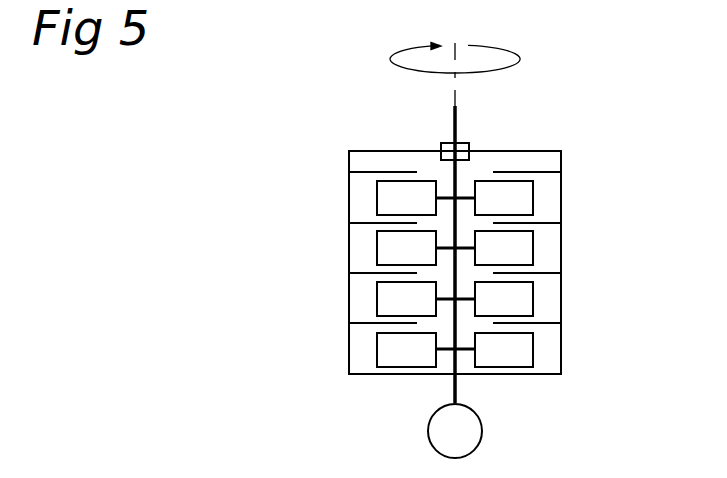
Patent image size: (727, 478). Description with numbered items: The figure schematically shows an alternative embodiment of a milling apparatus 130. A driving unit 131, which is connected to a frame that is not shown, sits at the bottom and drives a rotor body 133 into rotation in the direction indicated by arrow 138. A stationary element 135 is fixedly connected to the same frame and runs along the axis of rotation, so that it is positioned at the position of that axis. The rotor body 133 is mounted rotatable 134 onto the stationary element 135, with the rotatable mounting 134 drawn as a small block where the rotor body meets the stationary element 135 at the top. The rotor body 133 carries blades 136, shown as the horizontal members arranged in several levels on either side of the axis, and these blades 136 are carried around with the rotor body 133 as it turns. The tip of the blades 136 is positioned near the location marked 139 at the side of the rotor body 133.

The milling apparatus 130 is at (579, 148).
The driving unit 131 is at (483, 430).
The rotor body 133 is at (562, 293).
The rotatable mounting 134 is at (462, 148).
The stationary element 135 is at (455, 119).
The blades 136 is at (372, 223).
The arrow 138 is at (516, 53).
The blade tip position 139 is at (349, 250).